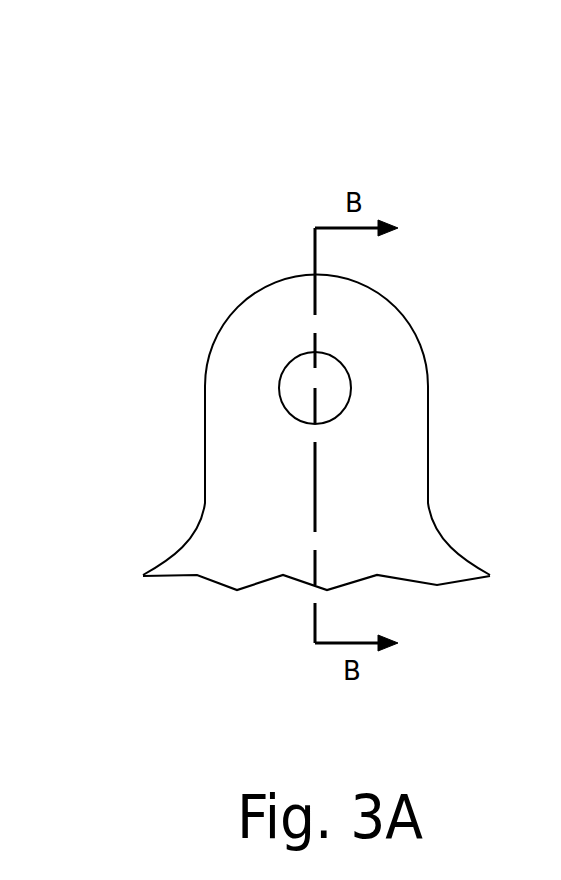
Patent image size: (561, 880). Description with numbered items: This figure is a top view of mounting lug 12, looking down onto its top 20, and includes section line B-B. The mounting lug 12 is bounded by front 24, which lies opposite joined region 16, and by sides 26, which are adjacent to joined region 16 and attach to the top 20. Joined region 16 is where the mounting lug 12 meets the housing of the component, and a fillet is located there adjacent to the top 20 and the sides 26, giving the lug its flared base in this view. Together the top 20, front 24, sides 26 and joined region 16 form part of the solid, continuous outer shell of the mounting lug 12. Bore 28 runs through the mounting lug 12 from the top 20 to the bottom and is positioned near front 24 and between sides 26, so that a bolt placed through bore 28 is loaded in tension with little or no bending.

The mounting lug 12 is at (255, 150).
The joined region 16 is at (443, 585).
The top 20 is at (321, 374).
The front 24 is at (304, 280).
The sides 26 is at (233, 312).
The bore 28 is at (330, 380).